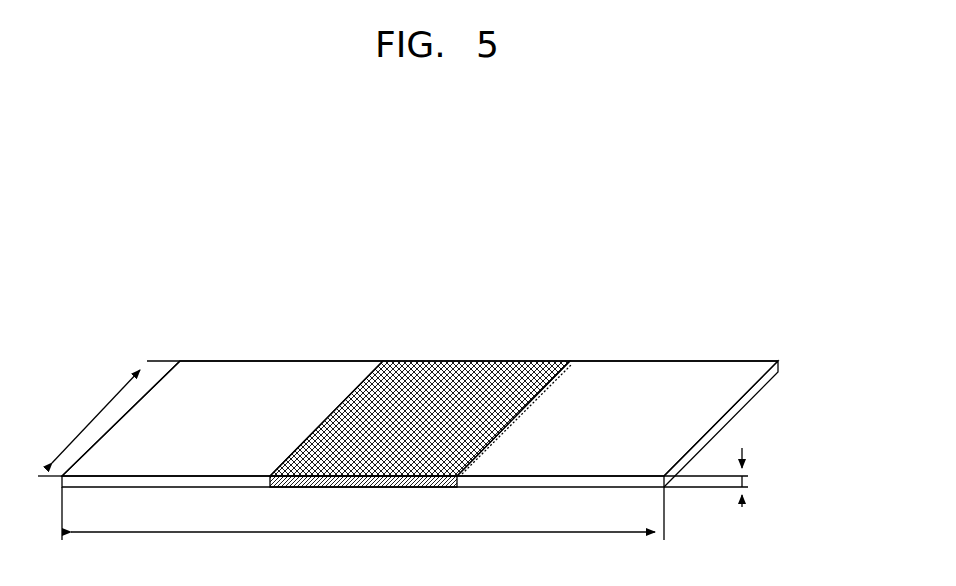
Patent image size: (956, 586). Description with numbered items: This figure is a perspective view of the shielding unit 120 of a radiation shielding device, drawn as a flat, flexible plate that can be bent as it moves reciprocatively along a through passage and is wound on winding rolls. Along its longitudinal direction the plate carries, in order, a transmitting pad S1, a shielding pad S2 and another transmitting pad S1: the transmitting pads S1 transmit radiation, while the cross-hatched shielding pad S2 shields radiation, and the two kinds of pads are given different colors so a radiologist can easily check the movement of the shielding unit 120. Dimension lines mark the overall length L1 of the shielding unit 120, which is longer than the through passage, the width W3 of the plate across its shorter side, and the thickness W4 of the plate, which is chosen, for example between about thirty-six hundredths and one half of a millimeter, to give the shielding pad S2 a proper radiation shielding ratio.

The shielding unit 120 is at (737, 286).
The transmitting pads S1 is at (270, 372).
The shielding pad S2 is at (473, 372).
The width W3 is at (89, 423).
The thickness W4 is at (724, 477).
The length L1 is at (363, 527).